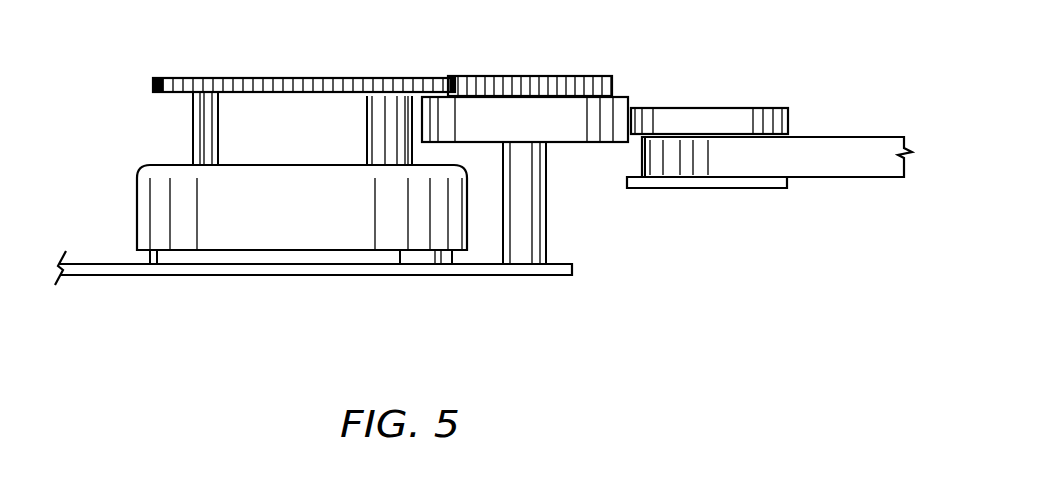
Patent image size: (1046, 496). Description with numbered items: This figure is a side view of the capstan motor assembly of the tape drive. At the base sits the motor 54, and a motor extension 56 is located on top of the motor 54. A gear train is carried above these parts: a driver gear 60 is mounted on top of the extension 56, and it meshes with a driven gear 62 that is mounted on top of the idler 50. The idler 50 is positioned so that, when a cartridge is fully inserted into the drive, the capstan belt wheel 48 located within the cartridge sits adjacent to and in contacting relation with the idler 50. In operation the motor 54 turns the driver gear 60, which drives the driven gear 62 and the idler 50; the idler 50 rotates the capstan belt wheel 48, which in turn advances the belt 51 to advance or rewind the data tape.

The capstan belt wheel 48 is at (713, 108).
The idler 50 is at (622, 96).
The belt 51 is at (822, 153).
The motor 54 is at (137, 218).
The motor extension 56 is at (193, 138).
The driver gear 60 is at (288, 78).
The driven gear 62 is at (482, 77).